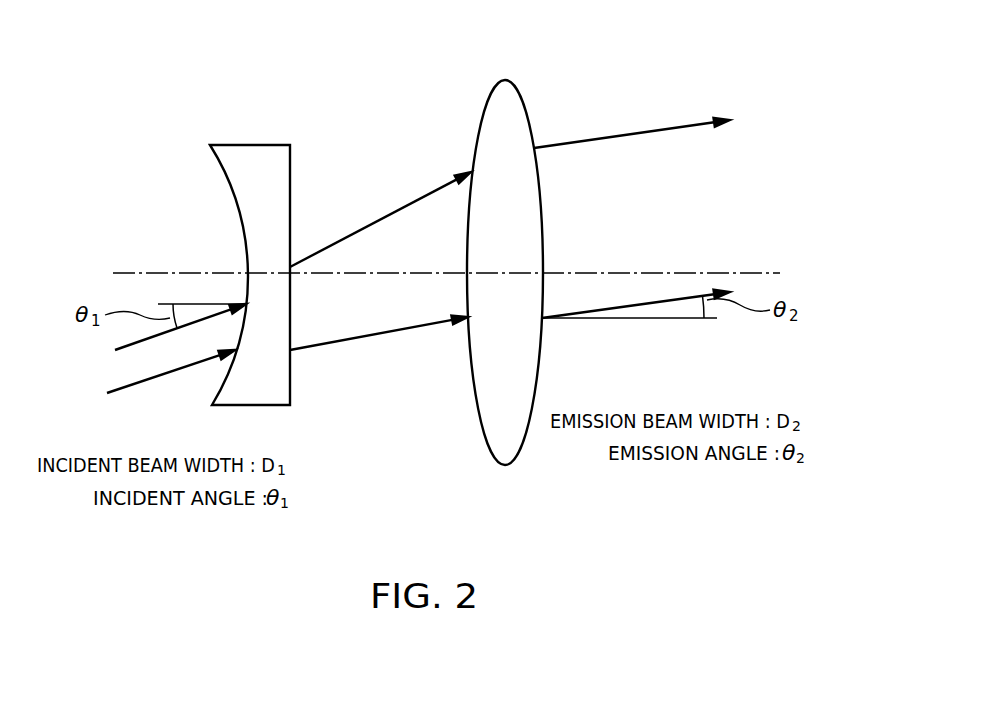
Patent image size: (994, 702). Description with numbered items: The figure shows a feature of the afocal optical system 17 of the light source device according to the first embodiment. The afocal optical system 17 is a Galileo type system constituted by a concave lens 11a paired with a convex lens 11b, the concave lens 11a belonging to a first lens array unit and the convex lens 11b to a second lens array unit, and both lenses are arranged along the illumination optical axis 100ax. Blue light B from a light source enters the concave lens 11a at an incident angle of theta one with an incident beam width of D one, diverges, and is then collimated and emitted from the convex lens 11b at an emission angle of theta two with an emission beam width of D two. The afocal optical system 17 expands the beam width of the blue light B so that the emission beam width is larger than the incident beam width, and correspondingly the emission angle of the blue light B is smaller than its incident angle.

The afocal optical system 17 is at (455, 46).
The concave lens 11a is at (277, 151).
The convex lens 11b is at (487, 120).
The illumination optical axis 100ax is at (137, 273).
The blue light B is at (147, 337).